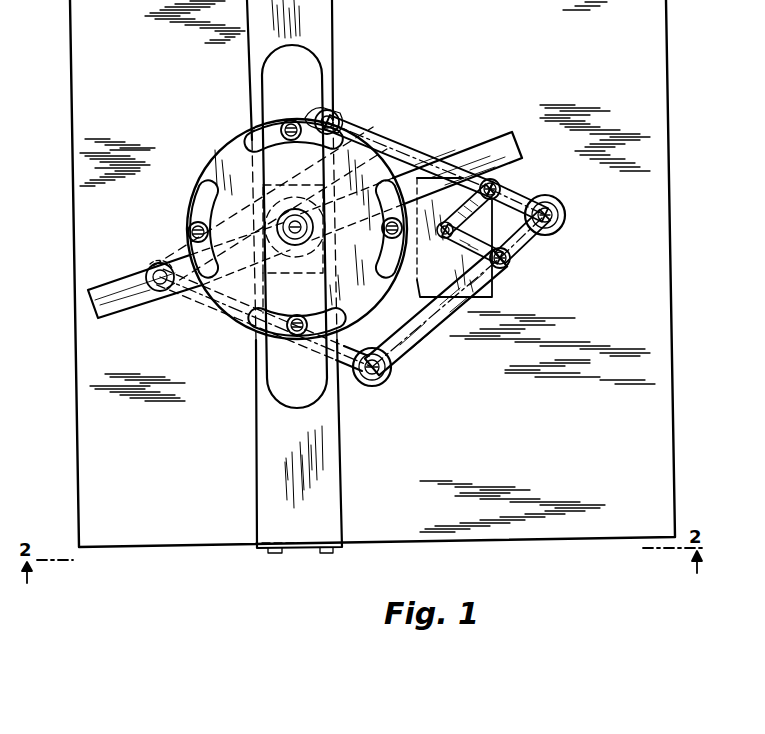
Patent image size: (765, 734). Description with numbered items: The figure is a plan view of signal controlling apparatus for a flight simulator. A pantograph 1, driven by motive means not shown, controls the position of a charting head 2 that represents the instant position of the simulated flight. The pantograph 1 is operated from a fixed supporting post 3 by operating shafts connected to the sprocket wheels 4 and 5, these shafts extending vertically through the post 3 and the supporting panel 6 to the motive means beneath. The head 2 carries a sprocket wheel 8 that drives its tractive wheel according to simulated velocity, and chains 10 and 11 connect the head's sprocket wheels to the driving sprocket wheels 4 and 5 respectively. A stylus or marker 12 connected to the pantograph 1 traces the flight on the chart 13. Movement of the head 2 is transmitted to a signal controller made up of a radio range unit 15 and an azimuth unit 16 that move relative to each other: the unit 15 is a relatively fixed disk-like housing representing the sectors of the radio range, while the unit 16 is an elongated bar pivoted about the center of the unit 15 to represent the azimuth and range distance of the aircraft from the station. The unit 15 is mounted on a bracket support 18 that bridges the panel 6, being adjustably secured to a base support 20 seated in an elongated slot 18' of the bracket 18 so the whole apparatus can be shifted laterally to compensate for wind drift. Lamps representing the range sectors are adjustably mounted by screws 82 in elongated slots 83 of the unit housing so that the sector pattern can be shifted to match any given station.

The pantograph 1 is at (421, 158).
The charting head 2 is at (155, 268).
The fixed supporting post 3 is at (562, 210).
The sprocket wheel 4 is at (553, 230).
The sprocket wheel 5 is at (548, 200).
The supporting panel 6 is at (660, 451).
The sprocket wheel 8 is at (160, 293).
The chain 10 is at (392, 367).
The chain 11 is at (353, 118).
The stylus or marker 12 is at (444, 238).
The chart 13 is at (420, 290).
The radio range unit 15 is at (237, 143).
The azimuth unit 16 is at (510, 132).
The bracket support 18 is at (312, 276).
The elongated slot 18' is at (274, 226).
The base support 20 is at (350, 315).
The screws 82 is at (290, 120).
The elongated slots 83 is at (205, 212).